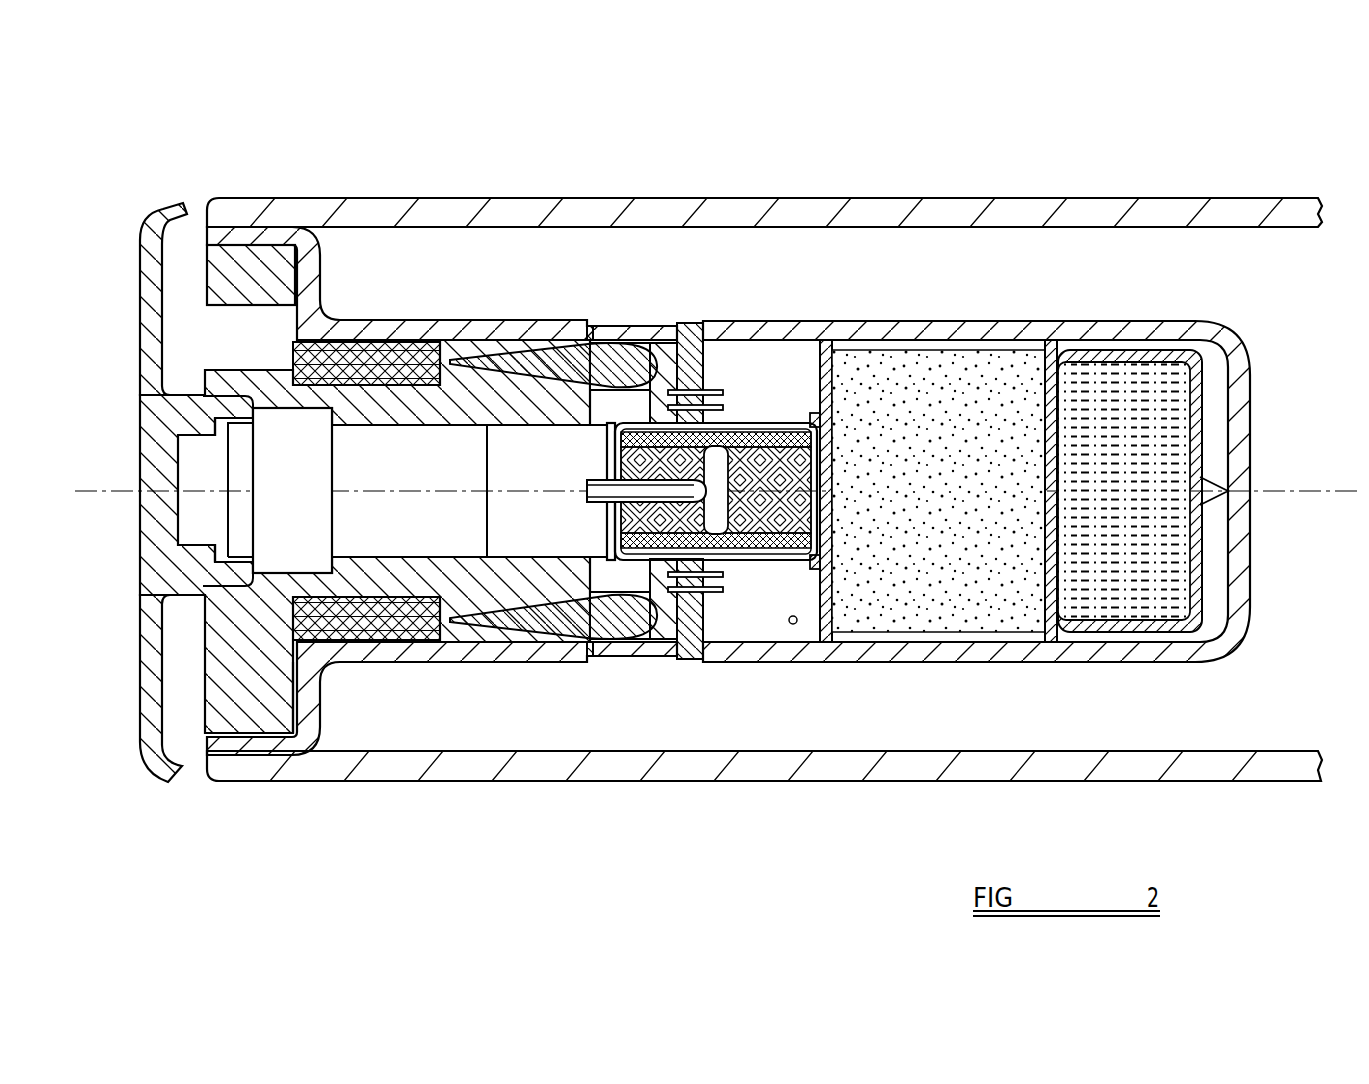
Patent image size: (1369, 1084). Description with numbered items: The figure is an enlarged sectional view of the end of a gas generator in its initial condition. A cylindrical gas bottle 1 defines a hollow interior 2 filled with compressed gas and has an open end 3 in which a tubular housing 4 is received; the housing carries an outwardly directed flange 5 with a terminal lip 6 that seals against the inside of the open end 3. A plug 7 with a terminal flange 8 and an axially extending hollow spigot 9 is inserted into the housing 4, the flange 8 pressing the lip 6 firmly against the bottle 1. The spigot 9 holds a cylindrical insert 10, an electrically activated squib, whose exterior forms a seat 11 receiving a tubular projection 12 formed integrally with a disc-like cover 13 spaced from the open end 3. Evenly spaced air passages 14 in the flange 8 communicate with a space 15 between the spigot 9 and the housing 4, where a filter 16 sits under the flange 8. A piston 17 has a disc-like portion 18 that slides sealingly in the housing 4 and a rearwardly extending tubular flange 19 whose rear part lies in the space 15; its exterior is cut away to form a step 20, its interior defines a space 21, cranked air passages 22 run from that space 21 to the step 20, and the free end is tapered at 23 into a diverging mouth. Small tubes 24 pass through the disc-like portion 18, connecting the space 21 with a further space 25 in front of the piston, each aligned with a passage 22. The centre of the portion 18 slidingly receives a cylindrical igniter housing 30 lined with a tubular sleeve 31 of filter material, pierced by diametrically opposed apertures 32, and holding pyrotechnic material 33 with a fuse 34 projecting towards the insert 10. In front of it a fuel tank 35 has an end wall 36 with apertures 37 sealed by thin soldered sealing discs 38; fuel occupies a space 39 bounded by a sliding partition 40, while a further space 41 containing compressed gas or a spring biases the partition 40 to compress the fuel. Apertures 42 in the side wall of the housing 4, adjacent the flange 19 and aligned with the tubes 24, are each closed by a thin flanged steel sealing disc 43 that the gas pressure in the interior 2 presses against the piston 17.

The cylindrical gas bottle 1 is at (1152, 215).
The hollow interior 2 is at (1306, 278).
The open end 3 is at (260, 176).
The tubular housing 4 is at (1110, 328).
The outwardly directed flange 5 is at (313, 287).
The terminal lip 6 is at (267, 233).
The plug 7 is at (229, 629).
The terminal flange 8 is at (232, 678).
The hollow spigot 9 is at (407, 580).
The cylindrical insert 10 is at (285, 522).
The seat 11 is at (230, 442).
The tubular projection 12 is at (233, 407).
The cover 13 is at (167, 405).
The air passages 14 is at (232, 332).
The space 15 is at (455, 633).
The filter 16 is at (363, 645).
The piston 17 is at (650, 598).
The disc-like portion 18 is at (712, 620).
The tubular flange 19 is at (620, 598).
The step 20 is at (540, 637).
The space 21 is at (469, 491).
The cranked air passages 22 is at (585, 640).
The taper 23 is at (497, 620).
The small tubes 24 is at (733, 590).
The space 25 is at (793, 624).
The igniter housing 30 is at (793, 425).
The tubular sleeve 31 is at (763, 425).
The apertures 32 is at (737, 425).
The pyrotechnic material 33 is at (662, 445).
The fuse 34 is at (607, 473).
The fuel tank 35 is at (832, 390).
The end wall 36 is at (887, 390).
The apertures 37 is at (827, 332).
The sealing discs 38 is at (930, 352).
The space 39 is at (978, 373).
The sliding partition 40 is at (1013, 400).
The further space 41 is at (1113, 607).
The apertures 42 is at (588, 322).
The sealing disc 43 is at (618, 330).